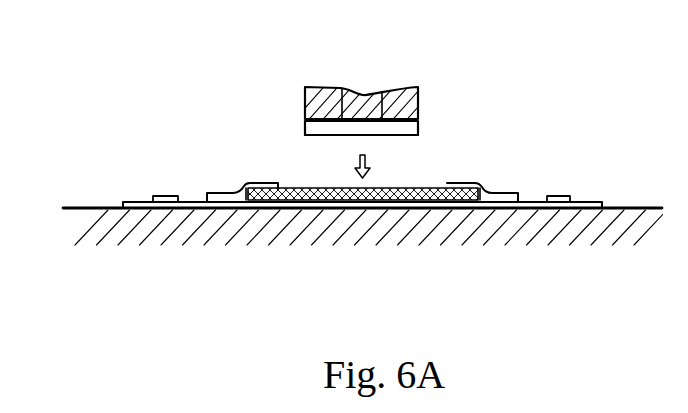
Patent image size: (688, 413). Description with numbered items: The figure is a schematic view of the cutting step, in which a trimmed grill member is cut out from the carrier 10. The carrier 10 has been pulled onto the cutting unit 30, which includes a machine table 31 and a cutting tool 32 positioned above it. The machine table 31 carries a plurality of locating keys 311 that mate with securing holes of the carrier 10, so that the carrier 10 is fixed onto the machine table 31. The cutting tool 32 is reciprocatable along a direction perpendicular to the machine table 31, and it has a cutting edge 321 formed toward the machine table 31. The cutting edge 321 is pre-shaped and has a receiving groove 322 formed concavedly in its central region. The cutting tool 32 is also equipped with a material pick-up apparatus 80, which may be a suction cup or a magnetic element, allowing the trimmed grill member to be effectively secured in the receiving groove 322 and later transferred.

The carrier 10 is at (327, 208).
The cutting unit 30 is at (552, 152).
The machine table 31 is at (592, 228).
The locating keys 311 is at (163, 196).
The cutting tool 32 is at (356, 95).
The cutting edge 321 is at (310, 142).
The receiving groove 322 is at (400, 130).
The material pick-up apparatus 80 is at (362, 92).